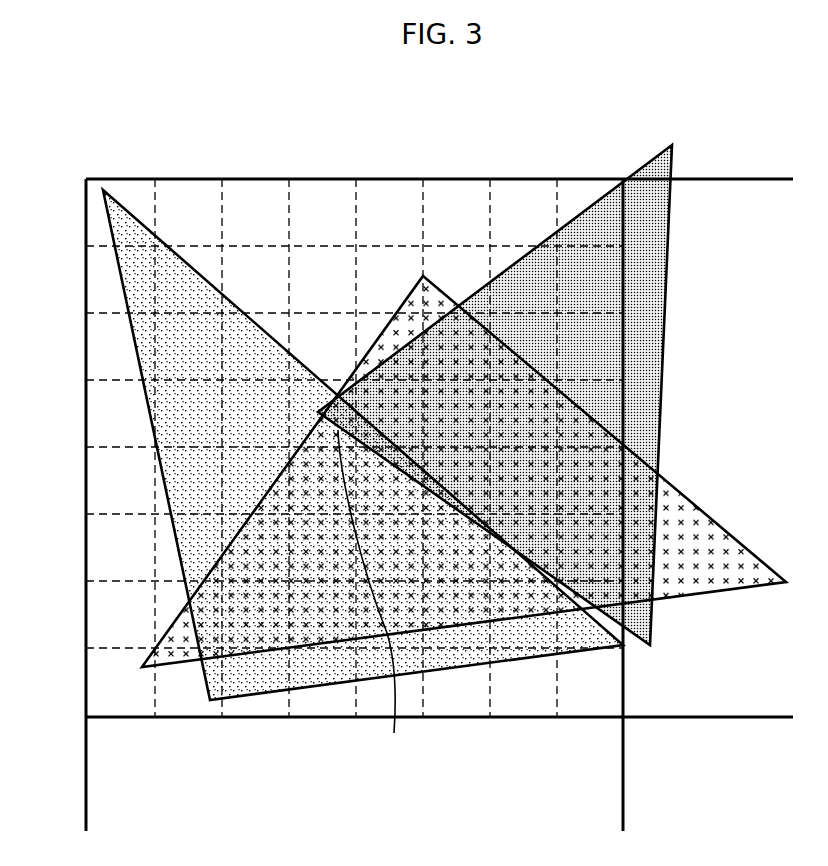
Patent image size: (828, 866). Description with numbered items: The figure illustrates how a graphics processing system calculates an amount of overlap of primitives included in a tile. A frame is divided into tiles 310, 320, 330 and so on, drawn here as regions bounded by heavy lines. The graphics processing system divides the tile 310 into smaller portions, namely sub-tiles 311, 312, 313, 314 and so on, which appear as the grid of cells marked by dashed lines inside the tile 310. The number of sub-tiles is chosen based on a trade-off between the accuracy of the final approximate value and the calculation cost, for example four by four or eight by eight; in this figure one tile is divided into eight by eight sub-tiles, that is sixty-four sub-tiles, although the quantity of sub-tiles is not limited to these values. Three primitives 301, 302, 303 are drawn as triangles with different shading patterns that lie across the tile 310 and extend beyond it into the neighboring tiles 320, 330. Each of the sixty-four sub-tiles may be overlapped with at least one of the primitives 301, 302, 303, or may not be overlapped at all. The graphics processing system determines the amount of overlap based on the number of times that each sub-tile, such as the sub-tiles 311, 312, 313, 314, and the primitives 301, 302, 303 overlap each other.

The primitive 301 is at (667, 289).
The primitive 302 is at (130, 210).
The primitive 303 is at (733, 533).
The tile 310 is at (393, 177).
The tile 320 is at (730, 177).
The sub-tile 311 is at (107, 486).
The sub-tile 312 is at (113, 700).
The sub-tile 313 is at (258, 632).
The sub-tile 314 is at (377, 595).
The tile 330 is at (83, 767).